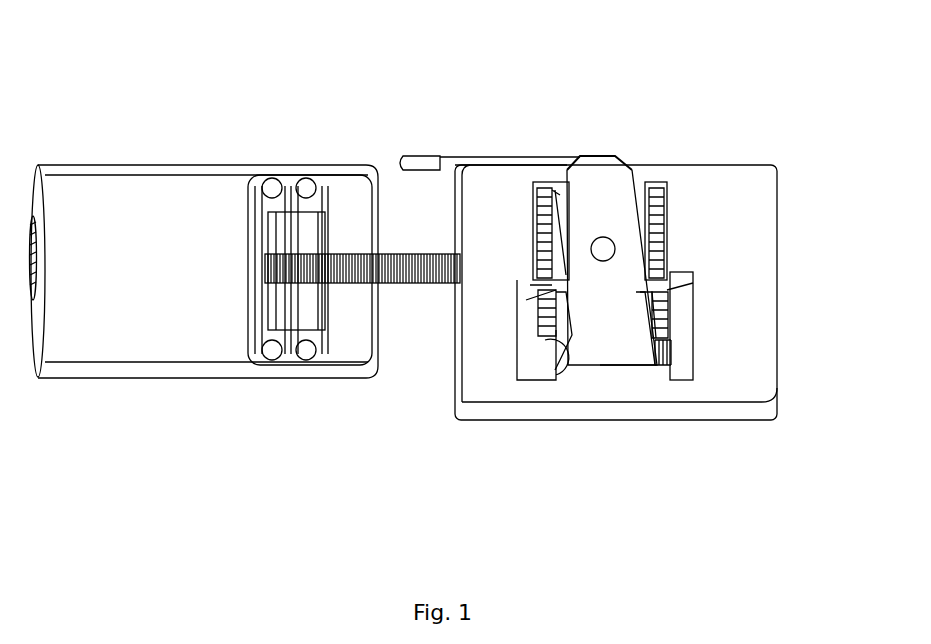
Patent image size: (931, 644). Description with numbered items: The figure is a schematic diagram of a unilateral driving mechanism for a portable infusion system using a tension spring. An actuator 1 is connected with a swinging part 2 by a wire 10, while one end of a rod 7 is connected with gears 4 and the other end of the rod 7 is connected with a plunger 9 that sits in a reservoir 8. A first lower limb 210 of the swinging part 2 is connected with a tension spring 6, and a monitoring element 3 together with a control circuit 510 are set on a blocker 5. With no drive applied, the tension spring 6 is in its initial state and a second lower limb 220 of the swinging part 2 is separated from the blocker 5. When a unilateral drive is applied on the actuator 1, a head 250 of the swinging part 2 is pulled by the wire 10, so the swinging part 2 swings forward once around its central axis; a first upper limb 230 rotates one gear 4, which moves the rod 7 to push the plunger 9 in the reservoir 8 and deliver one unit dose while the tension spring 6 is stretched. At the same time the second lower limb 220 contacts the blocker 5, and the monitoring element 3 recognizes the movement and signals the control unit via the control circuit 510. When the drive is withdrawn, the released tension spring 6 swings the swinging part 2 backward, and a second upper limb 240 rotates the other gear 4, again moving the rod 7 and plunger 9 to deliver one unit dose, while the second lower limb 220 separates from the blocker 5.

The actuator 1 is at (417, 152).
The swinging part 2 is at (607, 198).
The monitoring element 3 is at (558, 366).
The gears 4 is at (665, 231).
The blockers 5 is at (525, 360).
The tension spring 6 is at (666, 362).
The rod 7 is at (415, 284).
The reservoir 8 is at (207, 183).
The plunger 9 is at (255, 300).
The wire 10 is at (503, 158).
The first lower limb 210 is at (645, 353).
The second lower limb 220 is at (569, 356).
The first upper limb 230 is at (538, 306).
The second upper limb 240 is at (665, 287).
The head 250 is at (598, 162).
The control circuit 510 is at (530, 283).